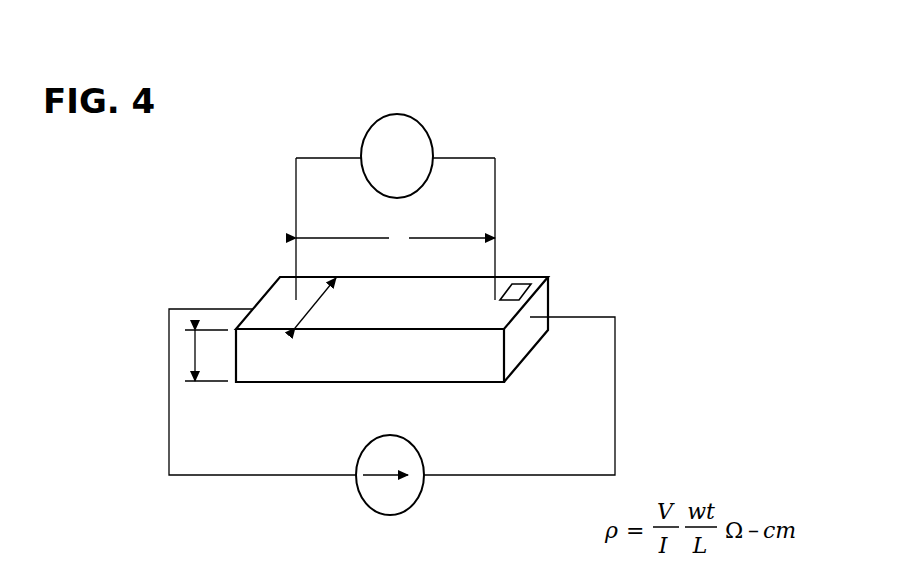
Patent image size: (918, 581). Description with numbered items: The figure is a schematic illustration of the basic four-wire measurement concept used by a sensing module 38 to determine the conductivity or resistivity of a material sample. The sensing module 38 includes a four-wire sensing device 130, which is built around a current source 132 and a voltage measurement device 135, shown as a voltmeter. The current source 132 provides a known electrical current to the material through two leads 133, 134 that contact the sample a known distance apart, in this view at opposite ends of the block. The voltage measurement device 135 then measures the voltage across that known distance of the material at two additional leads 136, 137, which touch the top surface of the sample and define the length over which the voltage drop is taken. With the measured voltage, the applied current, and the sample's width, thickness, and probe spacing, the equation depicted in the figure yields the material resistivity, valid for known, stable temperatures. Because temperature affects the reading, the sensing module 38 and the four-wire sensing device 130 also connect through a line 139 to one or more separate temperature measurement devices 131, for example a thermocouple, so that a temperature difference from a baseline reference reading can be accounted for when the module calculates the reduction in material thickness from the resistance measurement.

The sensing module 38 is at (661, 72).
The four-wire sensing device 130 is at (698, 118).
The temperature measurement device 131 is at (526, 277).
The current source 132 is at (420, 455).
The lead 133 is at (532, 318).
The lead 134 is at (252, 295).
The voltage measurement device 135 is at (432, 138).
The lead 136 is at (498, 295).
The lead 137 is at (295, 298).
The line 139 is at (521, 288).